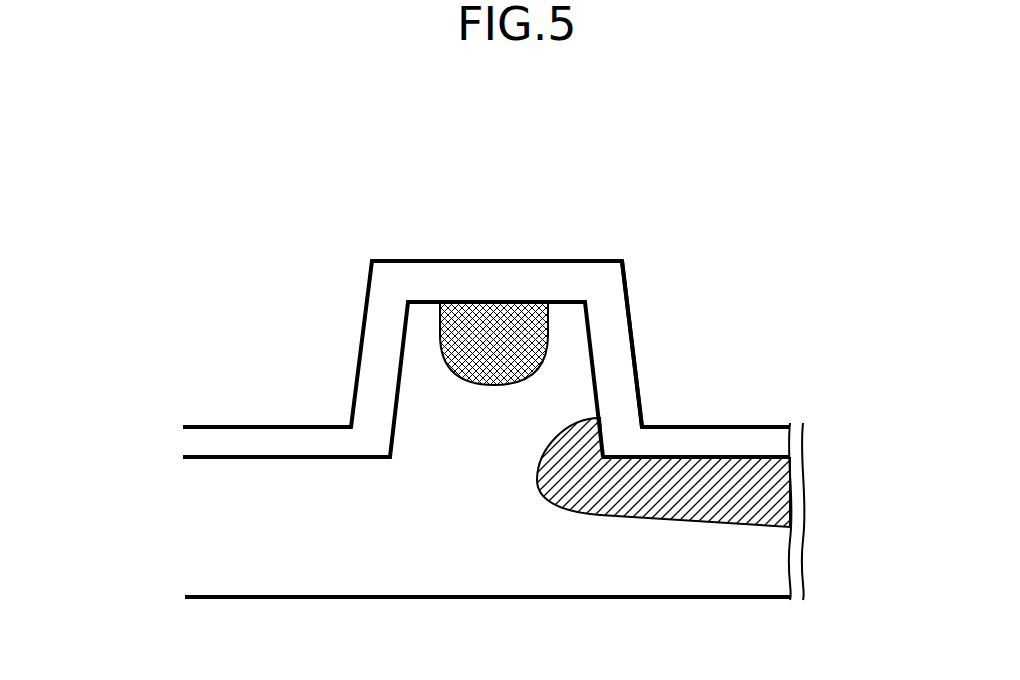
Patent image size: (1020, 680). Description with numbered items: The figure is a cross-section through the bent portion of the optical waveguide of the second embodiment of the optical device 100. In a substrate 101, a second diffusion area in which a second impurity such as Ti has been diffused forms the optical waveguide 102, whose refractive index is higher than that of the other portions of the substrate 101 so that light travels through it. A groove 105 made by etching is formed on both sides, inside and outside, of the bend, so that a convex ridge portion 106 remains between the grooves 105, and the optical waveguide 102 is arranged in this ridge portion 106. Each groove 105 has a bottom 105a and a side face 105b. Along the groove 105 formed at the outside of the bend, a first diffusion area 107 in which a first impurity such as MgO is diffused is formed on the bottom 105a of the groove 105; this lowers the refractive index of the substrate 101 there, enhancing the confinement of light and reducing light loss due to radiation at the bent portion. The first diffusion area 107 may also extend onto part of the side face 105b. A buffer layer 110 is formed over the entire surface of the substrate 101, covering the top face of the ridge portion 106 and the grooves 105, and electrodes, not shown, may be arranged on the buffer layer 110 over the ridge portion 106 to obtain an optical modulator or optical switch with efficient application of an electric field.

The optical device 100 is at (728, 128).
The substrate 101 is at (203, 520).
The optical waveguide 102 is at (470, 380).
The groove 105 is at (317, 402).
The bottom 105a is at (714, 455).
The side face 105b is at (595, 362).
The ridge portion 106 is at (572, 300).
The first diffusion area 107 is at (552, 500).
The buffer layer 110 is at (421, 281).